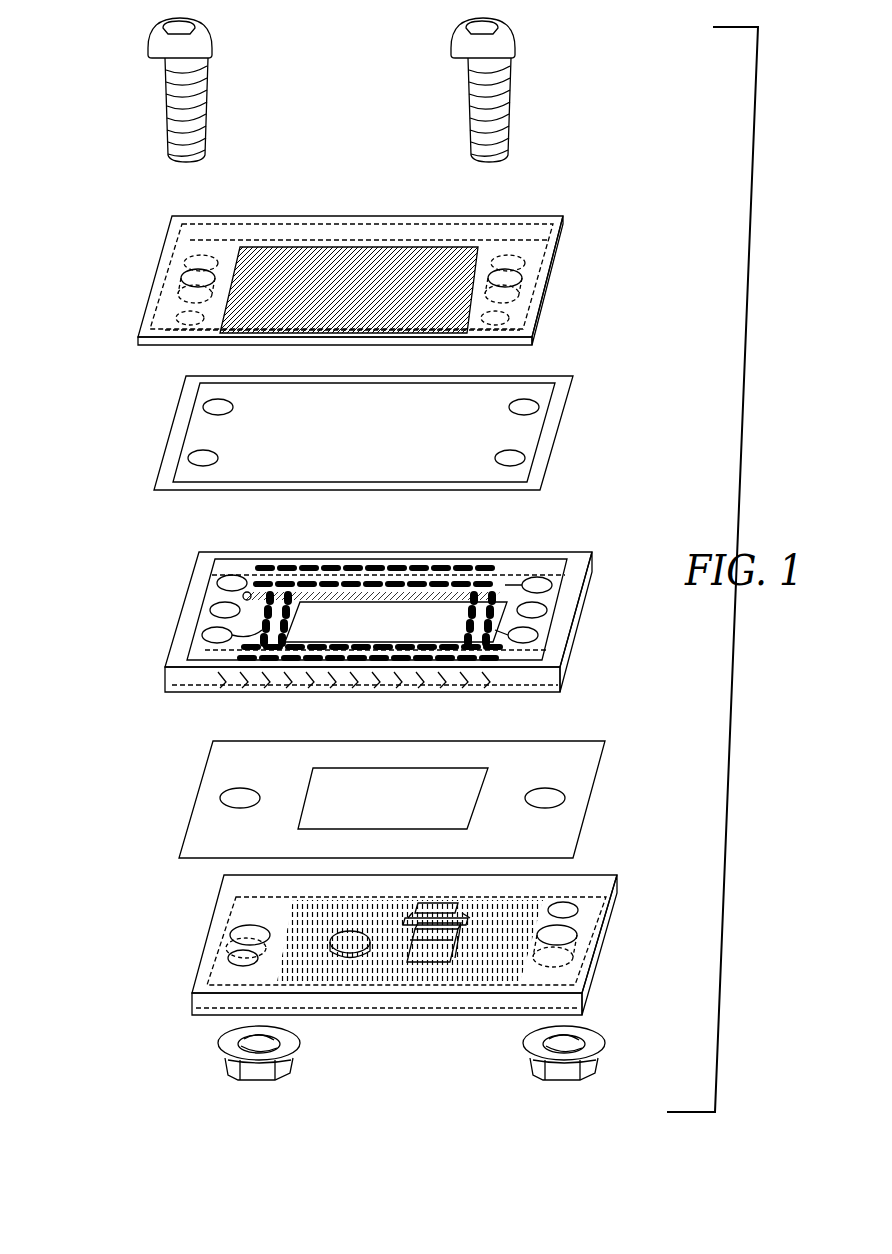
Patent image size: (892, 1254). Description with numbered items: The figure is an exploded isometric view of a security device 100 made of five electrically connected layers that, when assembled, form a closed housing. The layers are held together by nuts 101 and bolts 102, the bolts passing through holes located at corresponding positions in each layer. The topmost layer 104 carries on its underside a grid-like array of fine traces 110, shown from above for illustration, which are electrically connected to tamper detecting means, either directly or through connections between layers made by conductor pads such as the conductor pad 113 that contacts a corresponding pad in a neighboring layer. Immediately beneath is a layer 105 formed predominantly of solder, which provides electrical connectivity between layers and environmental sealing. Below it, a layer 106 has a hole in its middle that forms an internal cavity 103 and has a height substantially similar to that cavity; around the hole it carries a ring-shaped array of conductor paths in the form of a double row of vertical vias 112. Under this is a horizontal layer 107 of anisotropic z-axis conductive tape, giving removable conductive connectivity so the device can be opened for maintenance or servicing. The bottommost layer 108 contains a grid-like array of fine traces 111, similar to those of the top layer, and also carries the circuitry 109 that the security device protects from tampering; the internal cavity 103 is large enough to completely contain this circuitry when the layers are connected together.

The security device 100 is at (96, 130).
The nuts 101 is at (300, 1045).
The bolts 102 is at (208, 87).
The internal cavity 103 is at (333, 616).
The layer 104 is at (563, 218).
The layer 105 is at (573, 376).
The layer 106 is at (592, 553).
The layer 107 is at (603, 741).
The layer 108 is at (608, 875).
The circuitry 109 is at (330, 935).
The fine traces 110 is at (305, 272).
The fine traces 111 is at (308, 960).
The vias 112 is at (243, 648).
The conductor pads 113 is at (180, 318).